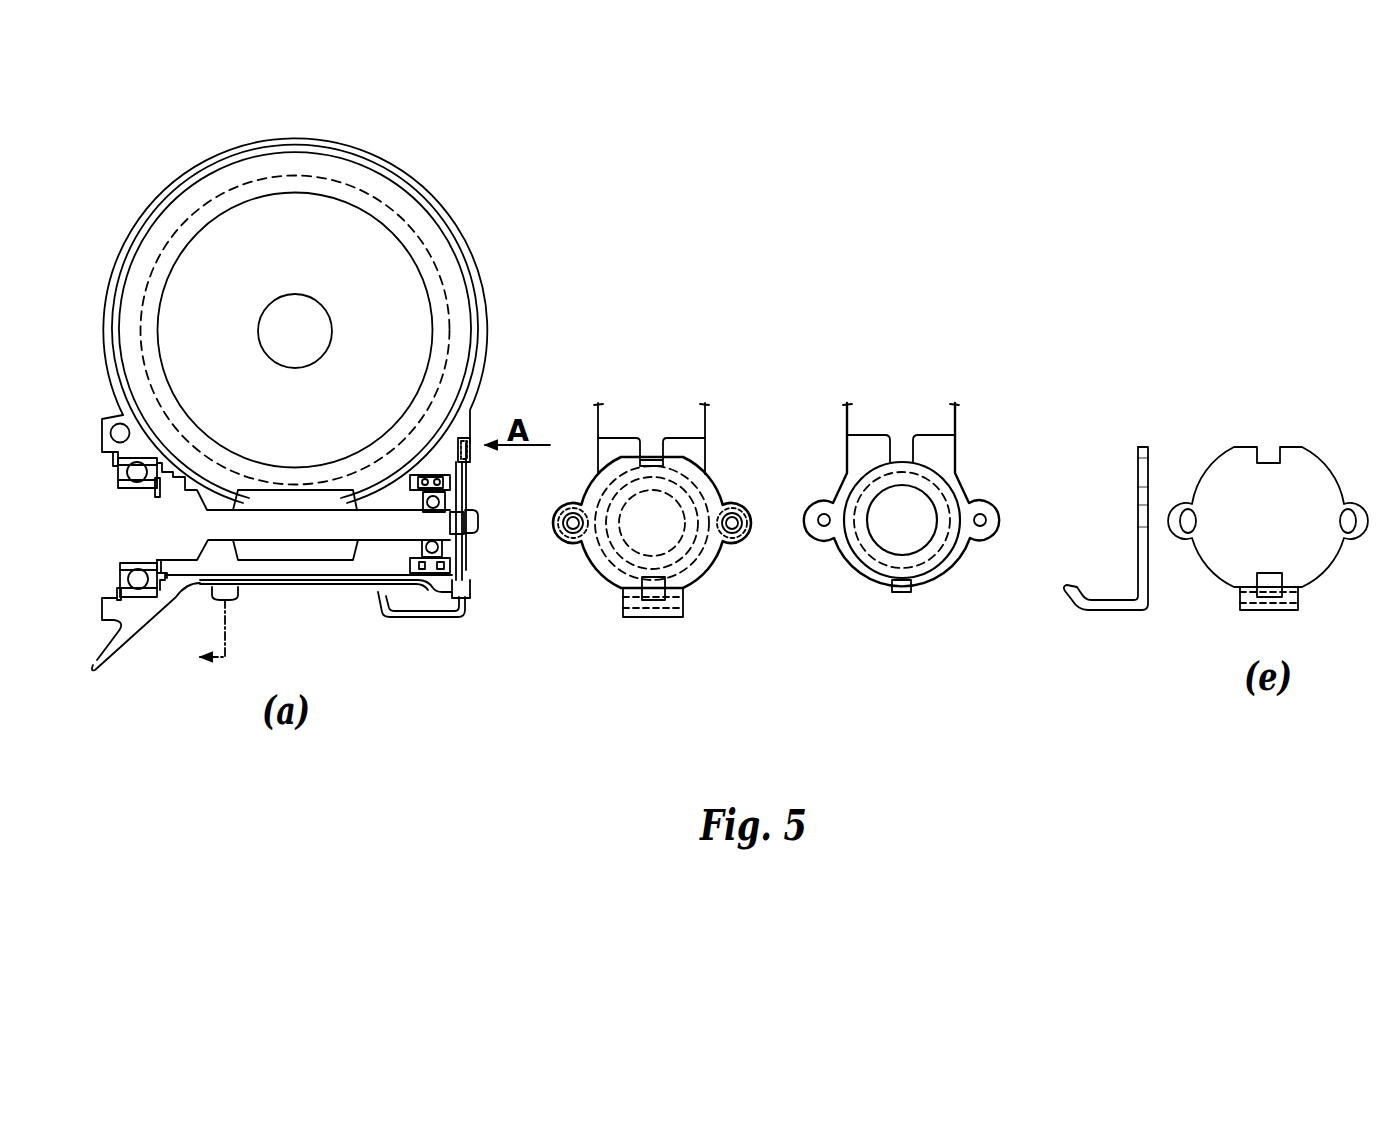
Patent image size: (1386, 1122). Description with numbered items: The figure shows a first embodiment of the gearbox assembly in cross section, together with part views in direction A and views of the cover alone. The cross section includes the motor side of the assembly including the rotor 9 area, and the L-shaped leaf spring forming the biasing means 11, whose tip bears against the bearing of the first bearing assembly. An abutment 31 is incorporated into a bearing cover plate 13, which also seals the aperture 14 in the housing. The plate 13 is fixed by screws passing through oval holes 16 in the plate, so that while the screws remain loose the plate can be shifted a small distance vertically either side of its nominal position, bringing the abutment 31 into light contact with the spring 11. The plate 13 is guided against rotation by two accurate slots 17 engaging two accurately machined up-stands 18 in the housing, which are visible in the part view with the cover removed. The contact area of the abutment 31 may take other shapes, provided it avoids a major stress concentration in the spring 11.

The rotor pulley 9 is at (413, 198).
The biasing means 11 is at (342, 594).
The bearing cover plate 13 is at (472, 549).
The aperture 14 is at (455, 562).
The oval holes 16 is at (1345, 502).
The slots 17 is at (1265, 445).
The up-stands 18 is at (915, 448).
The abutment 31 is at (382, 609).